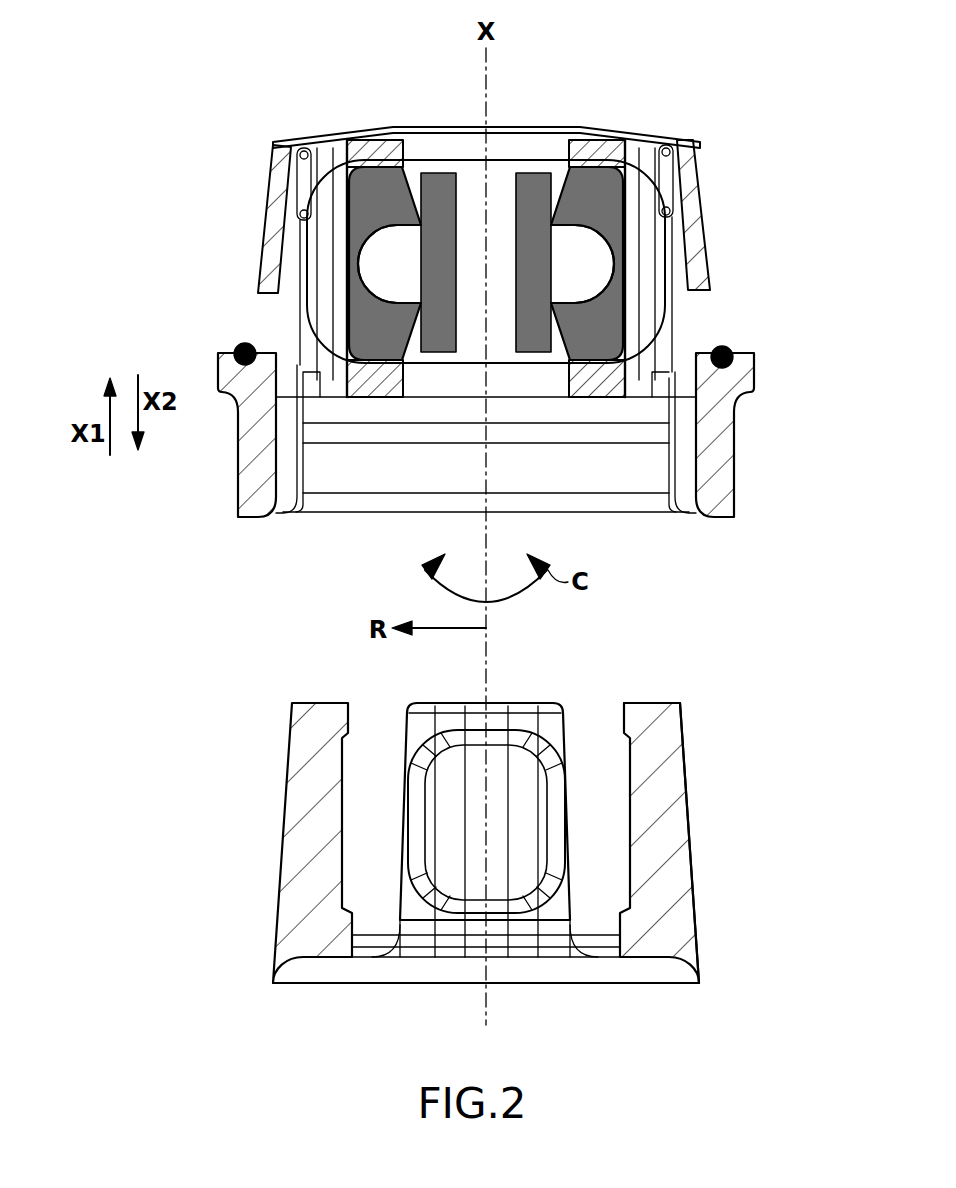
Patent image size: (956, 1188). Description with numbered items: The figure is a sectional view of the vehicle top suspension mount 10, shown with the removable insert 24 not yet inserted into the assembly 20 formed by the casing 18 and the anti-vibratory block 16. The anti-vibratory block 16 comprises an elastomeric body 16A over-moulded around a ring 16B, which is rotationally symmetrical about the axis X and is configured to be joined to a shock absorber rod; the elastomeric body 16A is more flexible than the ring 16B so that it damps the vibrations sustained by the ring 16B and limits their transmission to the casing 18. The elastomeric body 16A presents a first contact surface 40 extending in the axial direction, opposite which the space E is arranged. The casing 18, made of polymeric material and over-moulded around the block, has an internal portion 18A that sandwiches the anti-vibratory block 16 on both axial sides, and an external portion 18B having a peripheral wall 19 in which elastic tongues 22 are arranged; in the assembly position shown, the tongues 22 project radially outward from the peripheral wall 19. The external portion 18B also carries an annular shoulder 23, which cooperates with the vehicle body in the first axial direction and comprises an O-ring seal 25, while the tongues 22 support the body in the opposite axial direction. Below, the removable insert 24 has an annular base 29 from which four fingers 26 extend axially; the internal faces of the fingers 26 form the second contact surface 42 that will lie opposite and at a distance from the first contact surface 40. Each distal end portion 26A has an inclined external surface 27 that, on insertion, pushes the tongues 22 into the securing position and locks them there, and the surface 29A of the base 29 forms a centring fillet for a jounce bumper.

The vehicle top suspension mount 10 is at (226, 165).
The assembly 20 is at (190, 222).
The casing 18 is at (215, 445).
The internal portion 18A is at (600, 152).
The external portion 18B is at (287, 143).
The anti-vibratory block 16 is at (357, 160).
The elastomeric body 16A is at (380, 193).
The ring 16B is at (437, 185).
The first contact surface 40 is at (623, 187).
The tongues 22 is at (270, 254).
The peripheral wall 19 is at (680, 318).
The O-ring seal 25 is at (245, 343).
The shoulder 23 is at (733, 352).
The removable insert 24 is at (726, 883).
The fingers 26 is at (327, 718).
The distal end portion 26A is at (665, 775).
The inclined external surface 27 is at (680, 728).
The second contact surface 42 is at (340, 812).
The annular base 29 is at (593, 943).
The surface 29A is at (303, 958).